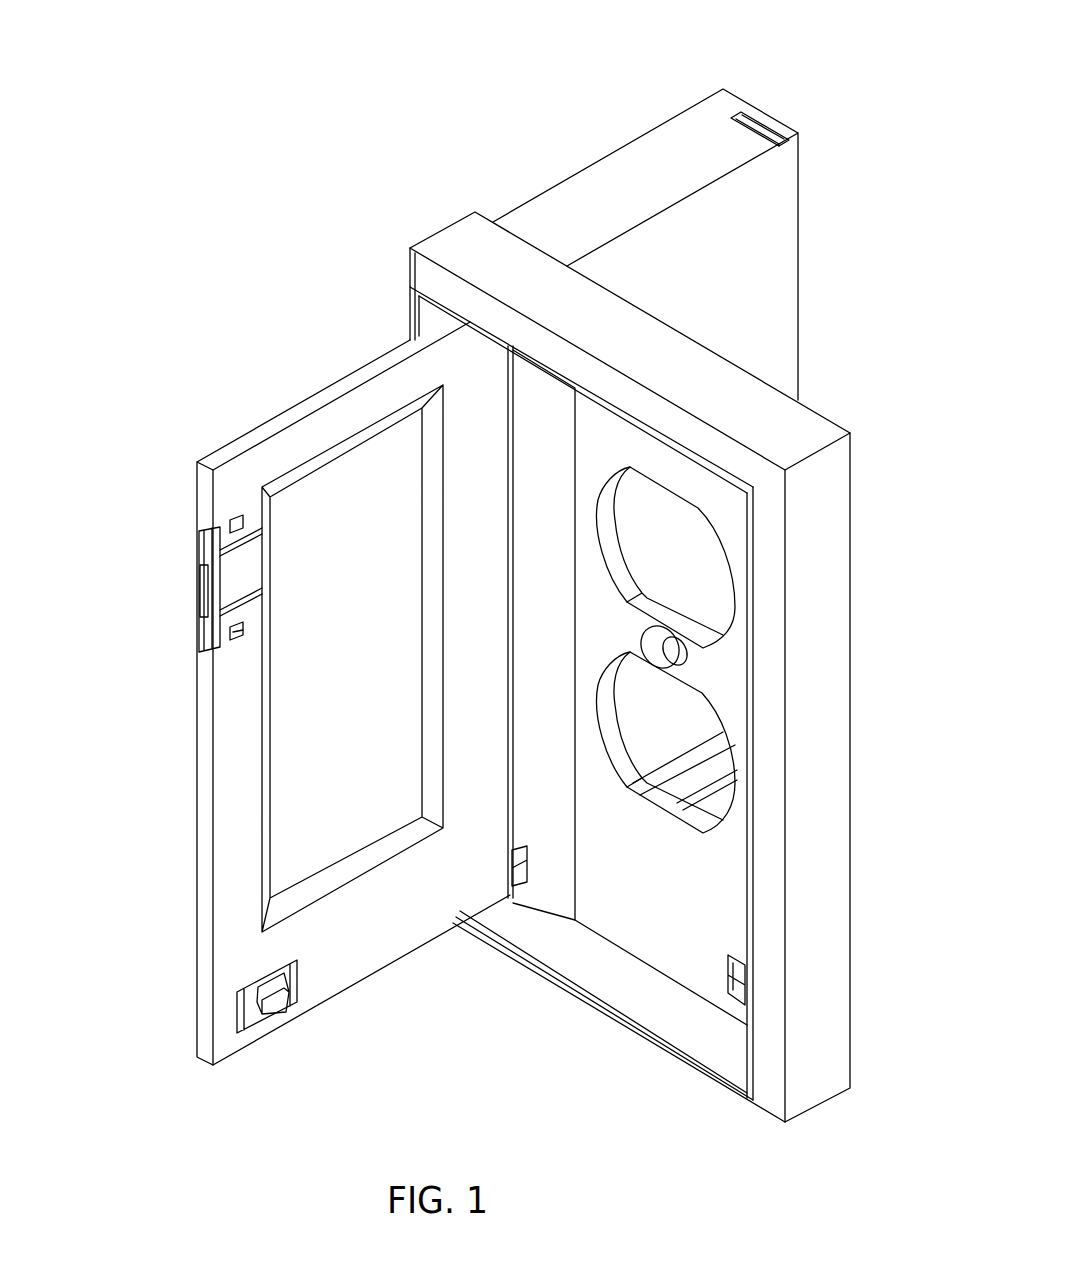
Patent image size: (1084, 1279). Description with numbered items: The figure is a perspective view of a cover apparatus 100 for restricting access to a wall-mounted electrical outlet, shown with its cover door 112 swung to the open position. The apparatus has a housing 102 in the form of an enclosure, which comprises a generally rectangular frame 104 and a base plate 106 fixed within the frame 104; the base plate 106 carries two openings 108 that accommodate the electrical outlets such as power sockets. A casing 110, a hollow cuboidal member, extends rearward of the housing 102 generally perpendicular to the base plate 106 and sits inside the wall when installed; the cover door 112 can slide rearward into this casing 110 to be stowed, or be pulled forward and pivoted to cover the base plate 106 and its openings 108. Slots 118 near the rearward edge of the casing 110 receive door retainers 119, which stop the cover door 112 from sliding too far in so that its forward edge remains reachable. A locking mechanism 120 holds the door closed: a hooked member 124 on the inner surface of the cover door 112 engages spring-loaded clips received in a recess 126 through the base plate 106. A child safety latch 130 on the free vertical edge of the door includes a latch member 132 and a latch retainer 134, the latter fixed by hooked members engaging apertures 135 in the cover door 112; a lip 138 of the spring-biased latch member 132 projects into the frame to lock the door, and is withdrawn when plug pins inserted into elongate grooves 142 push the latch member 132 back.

The cover apparatus 100 is at (827, 72).
The housing 102 is at (686, 675).
The frame 104 is at (813, 1075).
The base plate 106 is at (673, 933).
The openings 108 is at (703, 598).
The casing 110 is at (651, 203).
The cover door 112 is at (284, 696).
The slots 118 is at (778, 143).
The door retainers 119 is at (748, 118).
The locking mechanism 120 is at (255, 1015).
The hooked member 124 is at (237, 1017).
The recess 126 is at (735, 985).
The child safety latch 130 is at (152, 589).
The latch member 132 is at (218, 608).
The latch retainer 134 is at (219, 553).
The apertures 135 is at (232, 524).
The lip 138 is at (198, 564).
The elongate grooves 142 is at (233, 633).